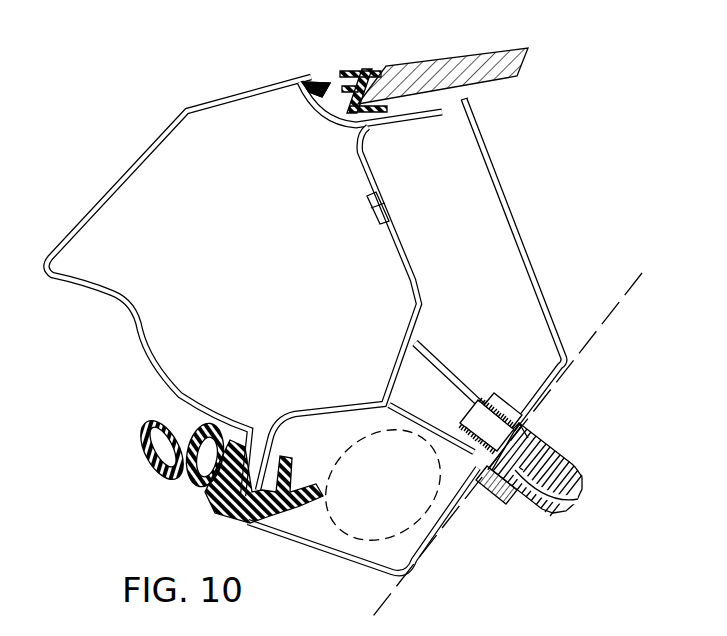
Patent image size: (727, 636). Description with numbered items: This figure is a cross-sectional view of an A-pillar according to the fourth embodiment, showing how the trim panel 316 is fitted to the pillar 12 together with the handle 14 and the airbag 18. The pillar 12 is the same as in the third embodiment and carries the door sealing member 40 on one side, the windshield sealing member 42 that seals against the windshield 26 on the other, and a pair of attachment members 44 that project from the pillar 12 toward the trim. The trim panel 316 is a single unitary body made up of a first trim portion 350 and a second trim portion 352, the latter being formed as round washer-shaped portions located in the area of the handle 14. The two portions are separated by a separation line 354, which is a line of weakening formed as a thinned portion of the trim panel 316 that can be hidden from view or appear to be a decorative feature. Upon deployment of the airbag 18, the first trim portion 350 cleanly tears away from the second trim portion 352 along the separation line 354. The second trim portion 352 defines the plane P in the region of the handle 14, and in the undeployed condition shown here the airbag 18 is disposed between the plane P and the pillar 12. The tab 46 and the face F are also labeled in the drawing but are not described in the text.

The pillar 12 is at (114, 164).
The windshield sealing member 42 is at (360, 72).
The windshield 26 is at (450, 62).
The tab 46 is at (384, 222).
The attachment member 44 is at (448, 368).
The door sealing member 40 is at (152, 466).
The airbag 18 is at (353, 517).
The trim panel 316 is at (535, 183).
The first trim portion 350 is at (556, 317).
The plane P is at (630, 292).
The separation line 354 is at (522, 417).
The handle 14 is at (568, 464).
The face F is at (520, 468).
The second trim portion 352 is at (500, 493).